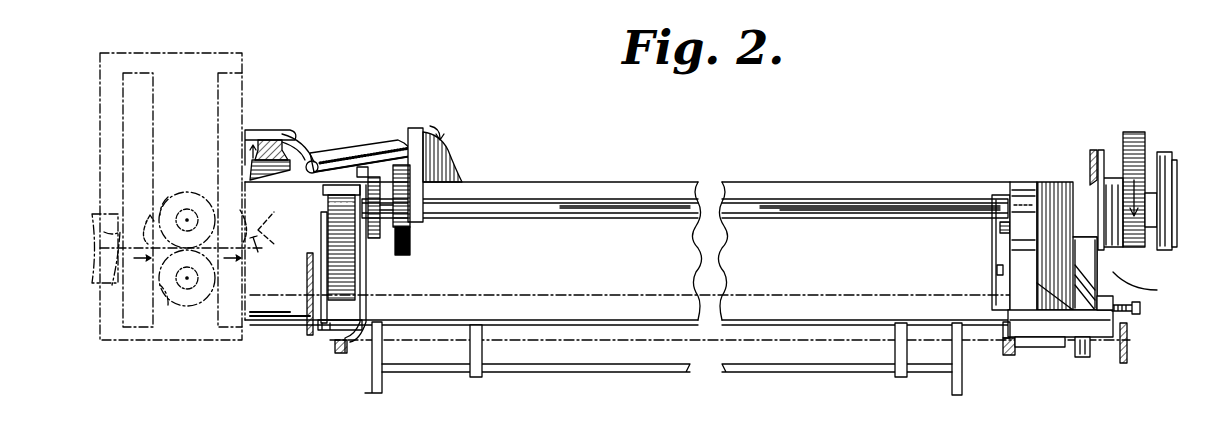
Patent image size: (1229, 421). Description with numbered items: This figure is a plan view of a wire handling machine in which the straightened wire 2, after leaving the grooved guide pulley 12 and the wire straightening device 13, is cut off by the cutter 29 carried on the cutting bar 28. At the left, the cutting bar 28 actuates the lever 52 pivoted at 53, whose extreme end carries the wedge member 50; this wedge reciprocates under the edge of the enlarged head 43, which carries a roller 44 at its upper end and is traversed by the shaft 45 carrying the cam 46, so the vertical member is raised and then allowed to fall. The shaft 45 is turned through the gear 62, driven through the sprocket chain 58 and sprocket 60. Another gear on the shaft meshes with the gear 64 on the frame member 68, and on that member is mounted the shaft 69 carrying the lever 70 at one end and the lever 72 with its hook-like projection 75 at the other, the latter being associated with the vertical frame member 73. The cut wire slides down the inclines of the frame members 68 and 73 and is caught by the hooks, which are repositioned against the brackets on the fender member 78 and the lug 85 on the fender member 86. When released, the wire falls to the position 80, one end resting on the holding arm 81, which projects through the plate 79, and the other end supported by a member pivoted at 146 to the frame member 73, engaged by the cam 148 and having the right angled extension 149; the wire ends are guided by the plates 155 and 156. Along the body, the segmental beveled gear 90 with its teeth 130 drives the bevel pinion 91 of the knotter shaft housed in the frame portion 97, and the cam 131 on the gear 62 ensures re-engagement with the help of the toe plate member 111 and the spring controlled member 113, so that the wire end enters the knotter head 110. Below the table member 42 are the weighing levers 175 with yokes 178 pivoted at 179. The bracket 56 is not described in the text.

The straightened wire 2 is at (926, 292).
The grooved guide pulley 12 is at (208, 194).
The wire straightening device 13 is at (106, 222).
The cutting bar 28 is at (282, 148).
The cutter 29 is at (272, 217).
The table member 42 is at (272, 318).
The enlarged head 43 is at (440, 158).
The roller 44 is at (410, 228).
The shaft 45 is at (890, 218).
The cam 46 is at (410, 250).
The wedge member 50 is at (432, 128).
The lever 52 is at (388, 140).
The pivot 53 is at (316, 160).
The bracket 56 is at (258, 130).
The sprocket chain 58 is at (1166, 152).
The sprocket 60 is at (1178, 170).
The gear 62 is at (1137, 134).
The gear 64 is at (374, 238).
The frame member 68 is at (330, 232).
The shaft 69 is at (575, 205).
The lever 70 is at (367, 292).
The lever 72 is at (992, 242).
The vertical frame member 73 is at (1022, 180).
The hook-like projection 75 is at (1002, 306).
The fender member 78 is at (340, 353).
The plate 79 is at (320, 330).
The wire position 80 is at (572, 341).
The holding arm 81 is at (321, 267).
The lug or bracket 85 is at (1003, 326).
The fender member 86 is at (1008, 355).
The segmental beveled gear 90 is at (1101, 152).
The bevel pinion 91 is at (1076, 272).
The frame housing 97 is at (1054, 326).
The knotter head 110 is at (1090, 352).
The toe plate member 111 is at (1110, 318).
The spring controlled member 113 is at (1141, 307).
The teeth 130 is at (1092, 155).
The cam 131 is at (1149, 285).
The pivot 146 is at (997, 268).
The cam 148 is at (998, 226).
The right angled extension 149 is at (1042, 347).
The guiding plate 155 is at (322, 290).
The guiding plate 156 is at (1128, 346).
The horizontally disposed lever 175 is at (482, 348).
The yoke 178 is at (370, 392).
The pivot 179 is at (432, 372).